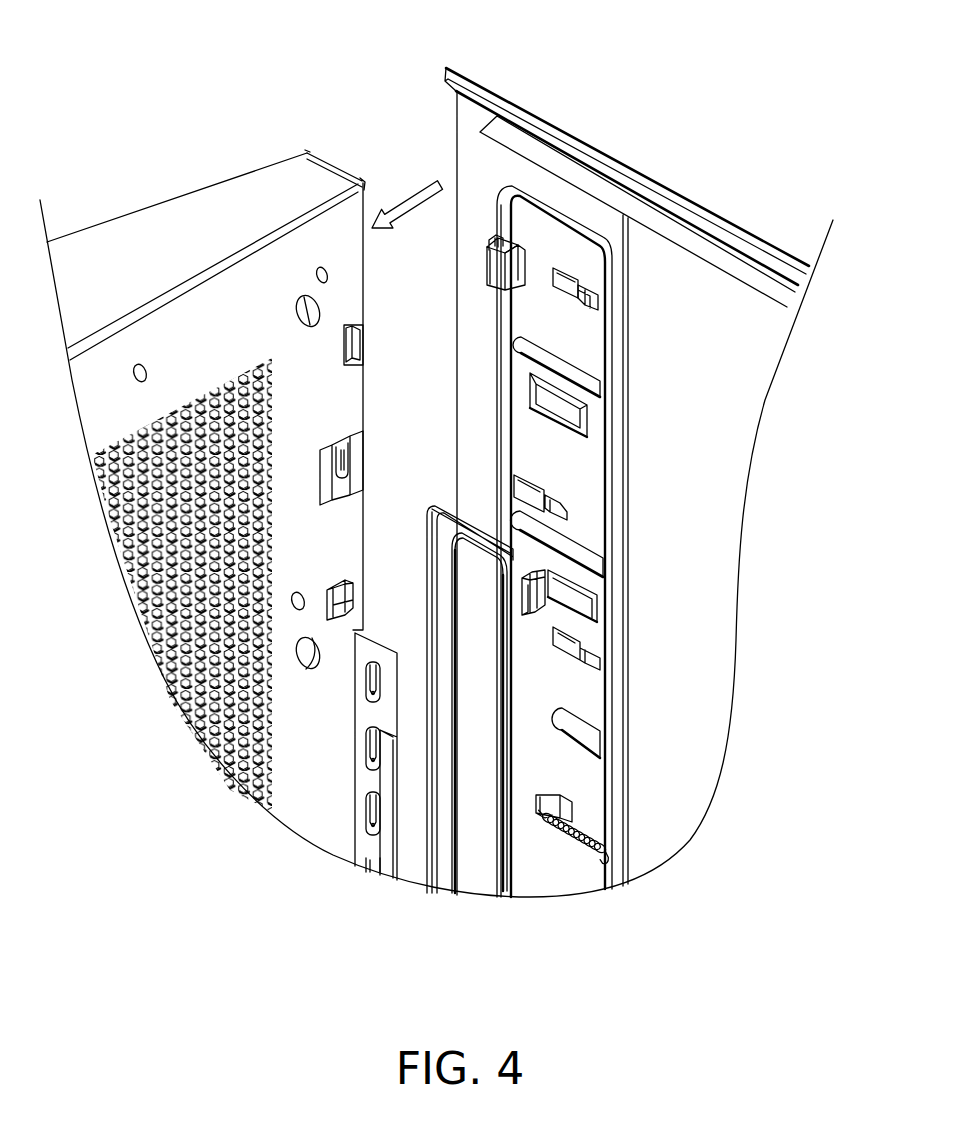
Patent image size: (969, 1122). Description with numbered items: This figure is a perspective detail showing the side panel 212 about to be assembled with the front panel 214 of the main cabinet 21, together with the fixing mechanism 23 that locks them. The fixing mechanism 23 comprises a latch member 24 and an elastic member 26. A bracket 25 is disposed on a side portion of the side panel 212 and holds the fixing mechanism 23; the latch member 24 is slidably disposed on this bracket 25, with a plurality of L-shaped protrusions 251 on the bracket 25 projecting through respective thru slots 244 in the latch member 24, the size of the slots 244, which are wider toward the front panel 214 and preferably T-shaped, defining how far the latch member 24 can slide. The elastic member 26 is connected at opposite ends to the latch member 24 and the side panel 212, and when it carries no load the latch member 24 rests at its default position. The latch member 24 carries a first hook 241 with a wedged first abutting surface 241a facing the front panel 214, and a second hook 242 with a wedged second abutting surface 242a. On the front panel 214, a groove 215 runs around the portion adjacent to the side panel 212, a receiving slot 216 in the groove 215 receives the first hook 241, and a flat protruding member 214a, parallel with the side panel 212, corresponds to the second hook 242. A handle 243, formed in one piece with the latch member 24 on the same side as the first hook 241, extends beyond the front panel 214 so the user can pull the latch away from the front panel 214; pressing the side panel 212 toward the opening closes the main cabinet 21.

The main cabinet 21 is at (265, 105).
The side panel 212 is at (762, 262).
The front panel 214 is at (207, 300).
The protruding member 214a is at (365, 832).
The groove 215 is at (364, 337).
The receiving slot 216 is at (356, 348).
The fixing mechanism 23 is at (566, 945).
The latch member 24 is at (590, 474).
The first hook 241 is at (488, 272).
The first abutting surface 241a is at (486, 242).
The second hook 242 is at (532, 600).
The second abutting surface 242a is at (520, 565).
The handle 243 is at (430, 568).
The thru slots 244 is at (571, 293).
The bracket 25 is at (620, 428).
The L-shaped protrusions 251 is at (594, 298).
The elastic member 26 is at (567, 852).